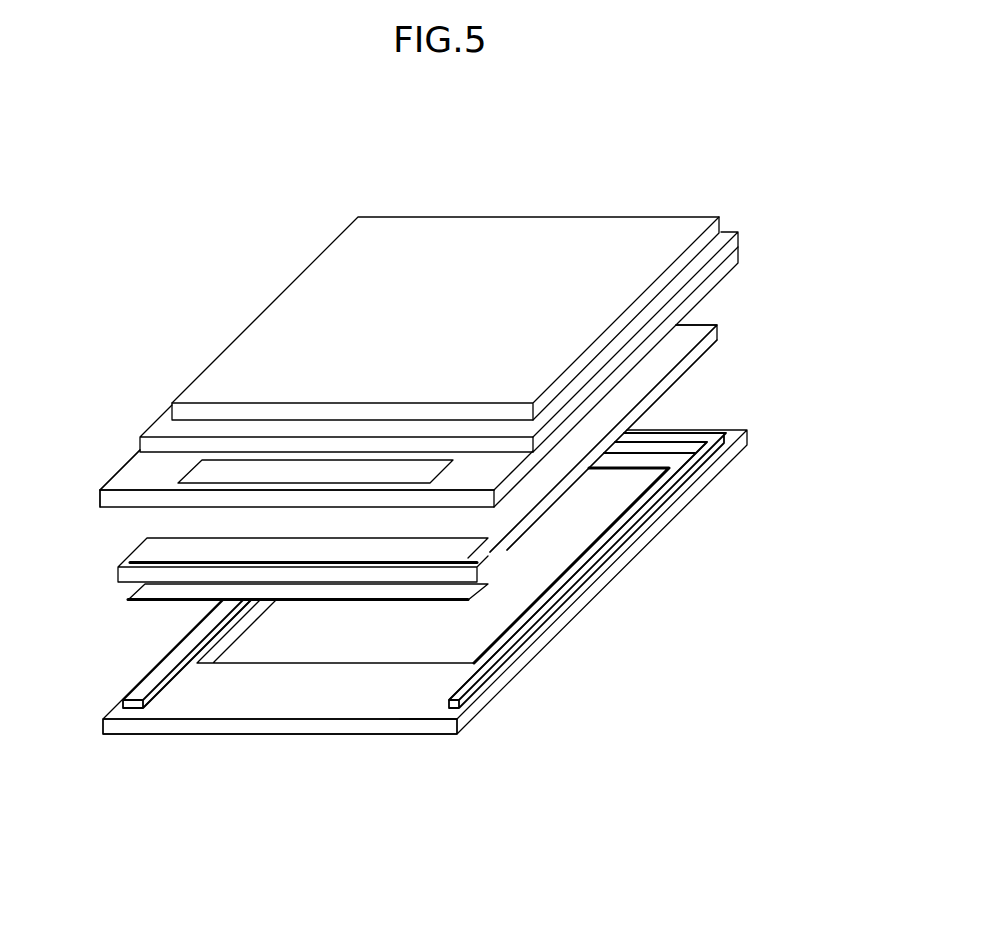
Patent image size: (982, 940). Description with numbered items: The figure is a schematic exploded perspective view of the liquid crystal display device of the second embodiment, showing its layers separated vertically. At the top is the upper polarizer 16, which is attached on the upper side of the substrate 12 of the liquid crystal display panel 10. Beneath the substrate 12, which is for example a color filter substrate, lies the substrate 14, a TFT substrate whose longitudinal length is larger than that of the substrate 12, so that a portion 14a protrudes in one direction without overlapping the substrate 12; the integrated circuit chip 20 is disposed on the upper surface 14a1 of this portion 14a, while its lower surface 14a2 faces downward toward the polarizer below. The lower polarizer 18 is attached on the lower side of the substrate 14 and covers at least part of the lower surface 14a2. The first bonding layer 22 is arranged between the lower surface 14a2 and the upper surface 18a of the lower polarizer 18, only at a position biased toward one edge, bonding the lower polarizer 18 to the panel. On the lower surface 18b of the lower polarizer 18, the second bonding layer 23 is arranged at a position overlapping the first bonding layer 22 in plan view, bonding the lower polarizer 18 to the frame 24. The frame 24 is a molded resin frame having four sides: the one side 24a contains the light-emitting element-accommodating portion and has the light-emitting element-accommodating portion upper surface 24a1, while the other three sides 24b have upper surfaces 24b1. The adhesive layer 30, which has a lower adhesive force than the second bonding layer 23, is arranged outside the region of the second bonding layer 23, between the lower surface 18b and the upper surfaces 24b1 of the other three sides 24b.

The liquid crystal display panel 10 is at (800, 211).
The substrate 12 is at (738, 236).
The substrate 14 is at (738, 253).
The portion 14a is at (160, 470).
The upper surface 14a1 is at (122, 484).
The lower surface 14a2 is at (122, 511).
The upper polarizer 16 is at (503, 248).
The lower polarizer 18 is at (742, 333).
The upper surface 18a is at (688, 334).
The lower surface 18b is at (692, 368).
The integrated circuit chip 20 is at (265, 470).
The first bonding layer 22 is at (143, 548).
The second bonding layer 23 is at (147, 590).
The frame 24 is at (590, 632).
The one side 24a is at (263, 726).
The light-emitting element-accommodating portion upper surface 24a1 is at (417, 693).
The other three sides 24b is at (683, 425).
The upper surfaces 24b1 is at (688, 478).
The adhesive layer 30 is at (593, 560).